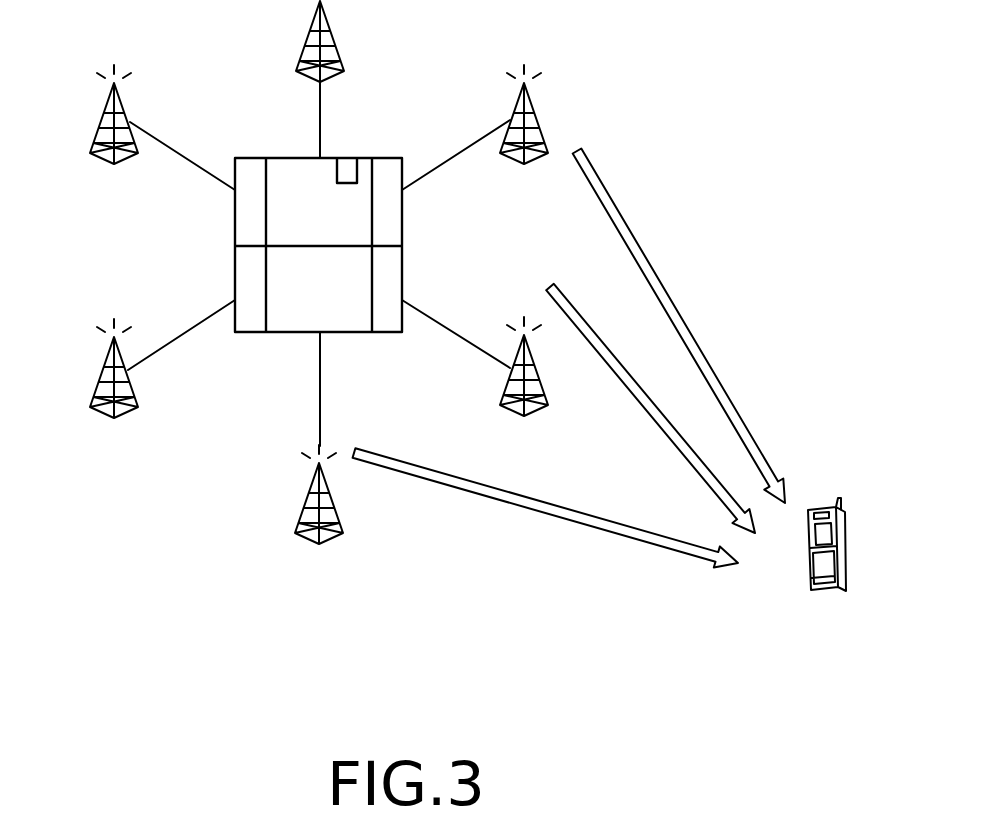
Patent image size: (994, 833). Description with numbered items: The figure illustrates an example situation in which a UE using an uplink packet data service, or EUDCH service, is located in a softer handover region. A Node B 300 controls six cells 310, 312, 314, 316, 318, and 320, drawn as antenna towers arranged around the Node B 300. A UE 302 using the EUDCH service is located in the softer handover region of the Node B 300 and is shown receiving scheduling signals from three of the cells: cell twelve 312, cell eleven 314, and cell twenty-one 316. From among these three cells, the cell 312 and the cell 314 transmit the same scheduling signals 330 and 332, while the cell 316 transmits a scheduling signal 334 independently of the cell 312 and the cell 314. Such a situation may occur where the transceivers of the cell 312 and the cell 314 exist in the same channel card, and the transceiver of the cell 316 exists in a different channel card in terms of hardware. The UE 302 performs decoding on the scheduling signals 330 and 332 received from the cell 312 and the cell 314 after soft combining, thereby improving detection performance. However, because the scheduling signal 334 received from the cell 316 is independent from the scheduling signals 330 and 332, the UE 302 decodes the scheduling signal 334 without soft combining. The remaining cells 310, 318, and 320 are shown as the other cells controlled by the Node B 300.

The Node B 300 is at (402, 222).
The UE 302 is at (846, 550).
The cell 310 is at (100, 374).
The cell#12 312 is at (331, 495).
The cell#11 314 is at (505, 390).
The cell#21 316 is at (538, 120).
The cell 318 is at (338, 31).
The cell 320 is at (100, 122).
The scheduling signal#1 330 is at (540, 510).
The scheduling signal#1 332 is at (619, 378).
The scheduling signal#2 334 is at (696, 300).